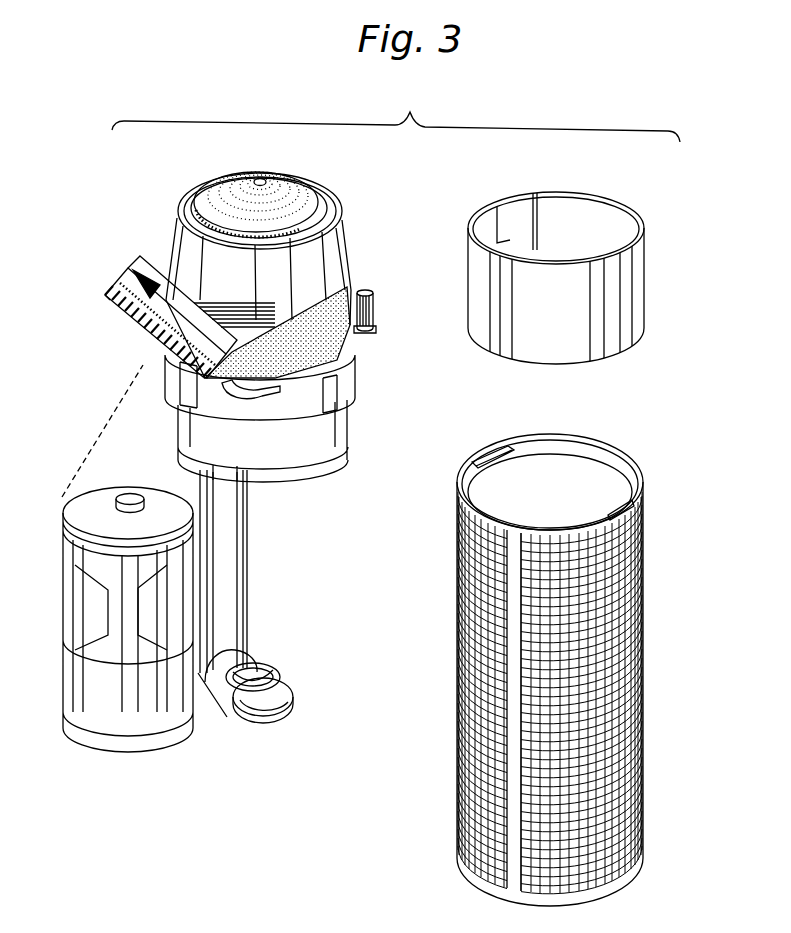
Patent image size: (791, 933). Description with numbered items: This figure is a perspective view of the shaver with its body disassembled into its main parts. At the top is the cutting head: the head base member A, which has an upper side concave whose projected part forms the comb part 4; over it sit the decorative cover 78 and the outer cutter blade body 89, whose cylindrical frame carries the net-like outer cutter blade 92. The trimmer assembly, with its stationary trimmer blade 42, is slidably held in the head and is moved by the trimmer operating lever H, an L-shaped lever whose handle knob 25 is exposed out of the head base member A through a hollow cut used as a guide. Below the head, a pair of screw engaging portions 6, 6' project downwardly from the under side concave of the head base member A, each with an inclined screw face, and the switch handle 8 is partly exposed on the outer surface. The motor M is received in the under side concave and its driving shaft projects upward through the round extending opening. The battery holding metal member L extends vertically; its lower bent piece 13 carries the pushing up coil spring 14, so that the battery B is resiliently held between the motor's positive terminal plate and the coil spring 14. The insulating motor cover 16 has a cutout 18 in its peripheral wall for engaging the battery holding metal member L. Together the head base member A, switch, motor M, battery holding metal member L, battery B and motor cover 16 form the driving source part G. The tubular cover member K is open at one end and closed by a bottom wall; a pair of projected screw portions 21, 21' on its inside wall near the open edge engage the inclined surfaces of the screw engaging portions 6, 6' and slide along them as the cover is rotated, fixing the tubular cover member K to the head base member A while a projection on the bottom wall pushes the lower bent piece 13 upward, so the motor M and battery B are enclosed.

The outer cutter blade 92 is at (287, 178).
The outer cutter blade body 89 is at (158, 255).
The decorative cover 78 is at (171, 305).
The stationary trimmer blade 42 is at (130, 307).
The comb part 4 is at (158, 333).
The handle knob 25 is at (373, 300).
The trimmer operating lever H is at (357, 330).
The head base member A is at (345, 350).
The screw engaging portion 6 is at (246, 390).
The screw engaging portion 6' is at (353, 399).
The switch handle 8 is at (250, 398).
The motor M is at (290, 468).
The battery holding metal member L is at (240, 542).
The lower bent piece 13 is at (237, 660).
The pushing up coil spring 14 is at (273, 670).
The battery B is at (140, 748).
The driving source part G is at (102, 431).
The motor cover 16 is at (603, 340).
The cutout 18 is at (520, 212).
The tubular cover member K is at (458, 710).
The projected screw portion 21 is at (491, 438).
The projected screw portion 21' is at (651, 484).